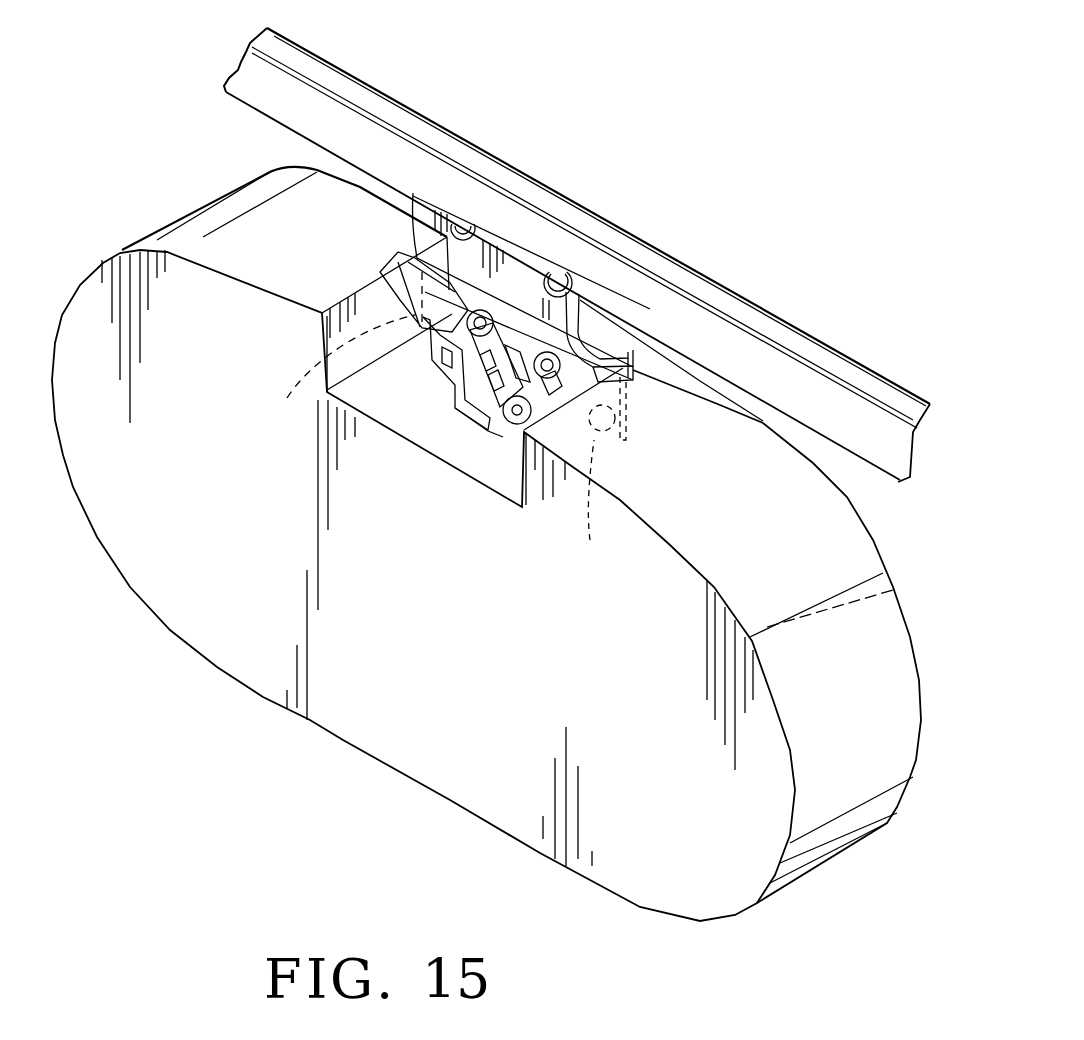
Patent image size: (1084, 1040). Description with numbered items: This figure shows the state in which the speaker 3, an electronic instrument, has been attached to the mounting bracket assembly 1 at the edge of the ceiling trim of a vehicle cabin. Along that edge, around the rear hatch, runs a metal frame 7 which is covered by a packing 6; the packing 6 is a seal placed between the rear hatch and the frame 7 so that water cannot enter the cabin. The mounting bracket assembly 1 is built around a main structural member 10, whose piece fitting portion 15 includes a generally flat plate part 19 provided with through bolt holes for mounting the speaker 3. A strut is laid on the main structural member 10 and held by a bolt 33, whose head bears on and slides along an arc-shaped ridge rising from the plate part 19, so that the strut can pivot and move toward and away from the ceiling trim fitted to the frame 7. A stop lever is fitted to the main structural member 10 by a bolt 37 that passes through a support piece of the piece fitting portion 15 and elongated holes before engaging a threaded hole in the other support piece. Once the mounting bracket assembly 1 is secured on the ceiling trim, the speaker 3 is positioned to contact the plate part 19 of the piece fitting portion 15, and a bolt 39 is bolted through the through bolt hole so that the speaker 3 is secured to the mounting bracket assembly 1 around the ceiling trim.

The mounting bracket assembly 1 is at (587, 331).
The speaker 3 is at (848, 556).
The packing 6 is at (777, 330).
The frame 7 is at (618, 318).
The main structural member 10 is at (413, 195).
The piece fitting portion 15 is at (498, 253).
The plate part 19 is at (596, 382).
The bolt 33 is at (548, 397).
The bolt 37 is at (525, 420).
The bolt 39 is at (438, 421).